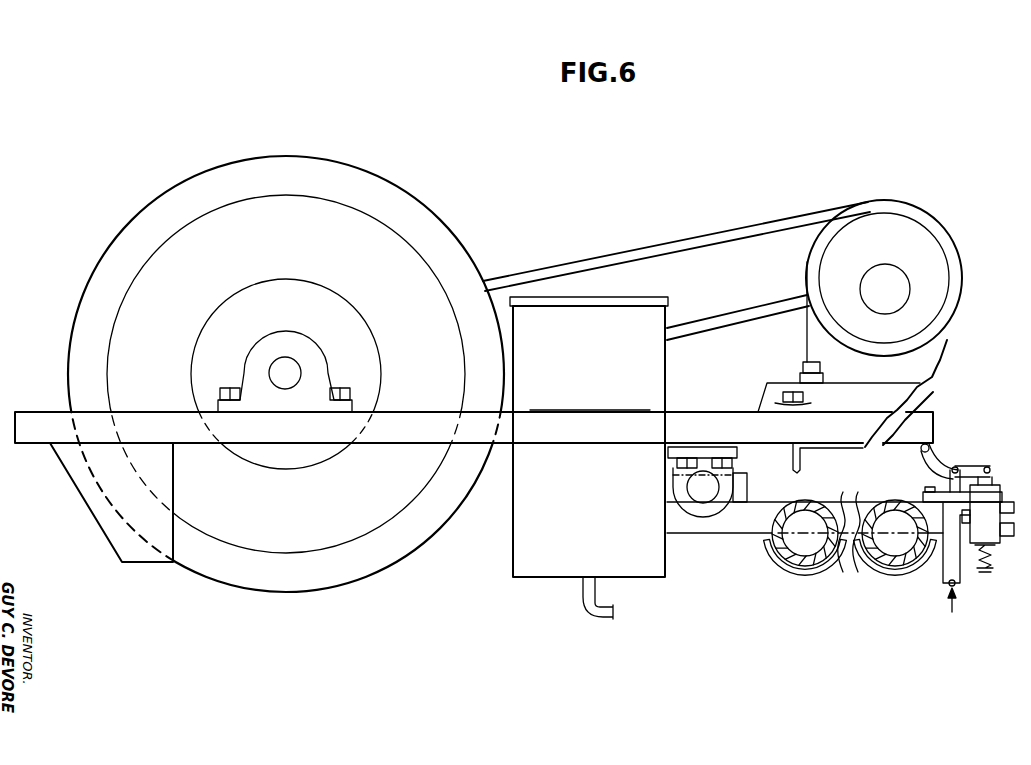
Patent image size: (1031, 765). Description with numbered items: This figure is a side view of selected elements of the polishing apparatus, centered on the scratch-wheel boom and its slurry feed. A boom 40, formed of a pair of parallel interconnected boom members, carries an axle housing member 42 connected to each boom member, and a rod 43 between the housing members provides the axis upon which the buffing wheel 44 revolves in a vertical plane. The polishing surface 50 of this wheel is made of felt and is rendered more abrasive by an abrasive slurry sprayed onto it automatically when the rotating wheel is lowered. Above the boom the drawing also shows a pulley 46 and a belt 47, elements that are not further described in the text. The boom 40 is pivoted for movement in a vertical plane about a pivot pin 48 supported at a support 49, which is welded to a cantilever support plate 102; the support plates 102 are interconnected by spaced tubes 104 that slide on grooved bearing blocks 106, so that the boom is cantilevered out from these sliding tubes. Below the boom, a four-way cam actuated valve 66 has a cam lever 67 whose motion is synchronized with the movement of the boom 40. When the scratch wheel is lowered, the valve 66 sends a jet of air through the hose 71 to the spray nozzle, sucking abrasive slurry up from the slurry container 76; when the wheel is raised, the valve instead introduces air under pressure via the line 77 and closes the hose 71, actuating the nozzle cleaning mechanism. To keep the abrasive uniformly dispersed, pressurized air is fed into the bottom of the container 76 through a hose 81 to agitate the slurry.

The boom 40 is at (36, 404).
The axle housing member 42 is at (256, 382).
The rod 43 is at (293, 372).
The buffing wheel 44 is at (280, 206).
The pulley 46 is at (952, 268).
The belt 47 is at (718, 233).
The pivot pin 48 is at (700, 494).
The support 49 is at (740, 497).
The polishing surface 50 is at (113, 244).
The four-way cam actuated valve 66 is at (965, 552).
The cam lever 67 is at (939, 460).
The hose 71 is at (1008, 537).
The slurry container 76 is at (667, 356).
The line 77 is at (1008, 503).
The hose 81 is at (607, 617).
The support plate 102 is at (870, 496).
The tube 104 is at (845, 501).
The grooved bearing block 106 is at (847, 560).